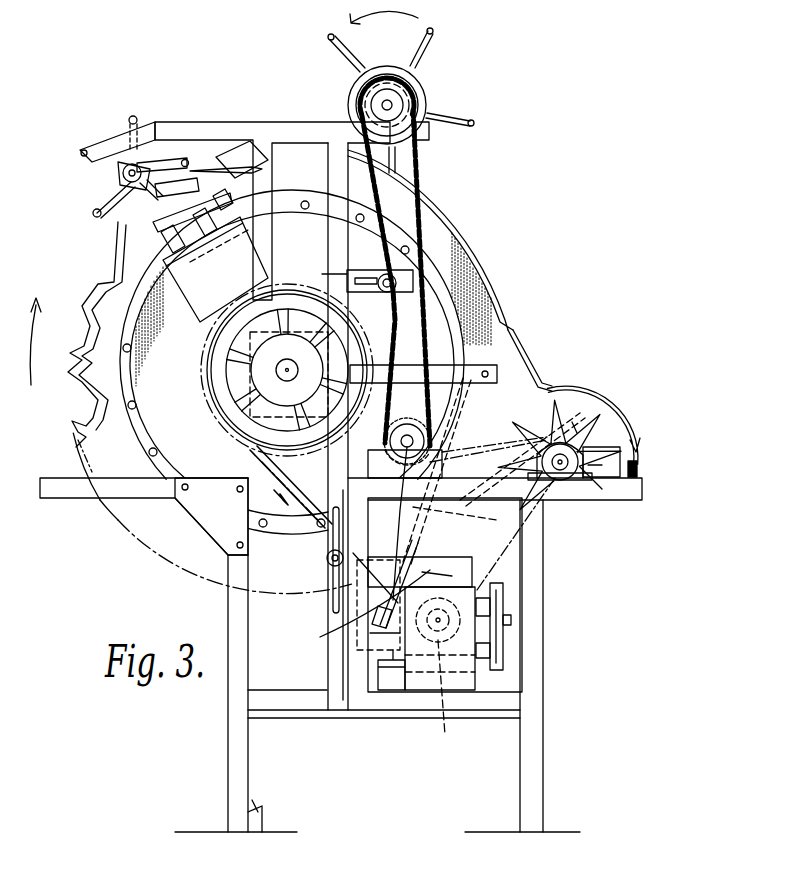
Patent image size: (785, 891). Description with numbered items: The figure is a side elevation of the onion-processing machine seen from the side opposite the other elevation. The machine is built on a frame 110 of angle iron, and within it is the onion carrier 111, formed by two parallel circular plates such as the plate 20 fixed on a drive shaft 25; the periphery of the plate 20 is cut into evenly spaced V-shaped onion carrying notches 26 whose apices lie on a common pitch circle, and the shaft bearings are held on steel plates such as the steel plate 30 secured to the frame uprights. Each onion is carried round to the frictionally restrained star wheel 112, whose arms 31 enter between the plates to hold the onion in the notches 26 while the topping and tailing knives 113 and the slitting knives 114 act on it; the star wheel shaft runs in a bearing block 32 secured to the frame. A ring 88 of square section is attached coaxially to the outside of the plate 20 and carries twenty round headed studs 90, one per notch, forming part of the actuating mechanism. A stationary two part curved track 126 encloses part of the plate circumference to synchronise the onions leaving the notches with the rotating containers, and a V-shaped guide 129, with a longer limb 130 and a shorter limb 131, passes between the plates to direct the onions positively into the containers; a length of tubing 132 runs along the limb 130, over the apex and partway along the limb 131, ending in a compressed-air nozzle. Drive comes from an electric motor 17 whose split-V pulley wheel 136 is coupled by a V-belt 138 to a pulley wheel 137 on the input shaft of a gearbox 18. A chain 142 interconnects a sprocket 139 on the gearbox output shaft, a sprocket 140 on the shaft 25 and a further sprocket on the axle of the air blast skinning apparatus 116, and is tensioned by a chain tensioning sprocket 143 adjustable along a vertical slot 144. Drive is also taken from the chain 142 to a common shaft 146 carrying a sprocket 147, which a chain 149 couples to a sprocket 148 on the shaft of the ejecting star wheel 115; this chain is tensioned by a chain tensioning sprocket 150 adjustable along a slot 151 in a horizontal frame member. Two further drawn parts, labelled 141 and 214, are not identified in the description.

The electric motor 17 is at (470, 568).
The gearbox 18 is at (458, 600).
The circular plate 20 is at (88, 330).
The drive shaft 25 is at (287, 362).
The onion carrying notches 26 is at (54, 336).
The steel plate 30 is at (262, 418).
The arms 31 is at (84, 146).
The bearing block 32 is at (112, 178).
The ring 88 is at (148, 285).
The round headed studs 90 is at (155, 455).
The frame 110 is at (226, 609).
The onion carrier 111 is at (72, 440).
The frictionally restrained star wheel 112 is at (112, 196).
The topping and tailing knives 113 is at (146, 235).
The slitting knives 114 is at (227, 157).
The ejecting star wheel 115 is at (428, 105).
The air blast skinning apparatus 116 is at (637, 470).
The curved track 126 is at (432, 214).
The guide 129 is at (440, 524).
The longer limb 130 is at (479, 484).
The shorter limb 131 is at (530, 367).
The tubing 132 is at (360, 610).
The pulley wheel 136 is at (500, 586).
The pulley wheel 137 is at (510, 648).
The V-belt 138 is at (520, 618).
The sprocket 139 is at (460, 691).
The sprocket 140 is at (262, 357).
The guard arc 141 is at (618, 417).
The chain 142 is at (282, 468).
The chain tensioning sprocket 143 is at (326, 560).
The vertical slot 144 is at (333, 603).
The common shaft 146 is at (413, 508).
The sprocket 147 is at (406, 418).
The sprocket 148 is at (418, 90).
The chain 149 is at (422, 162).
The chain tensioning sprocket 150 is at (378, 276).
The slot 151 is at (322, 270).
The star wheel 214 is at (578, 412).